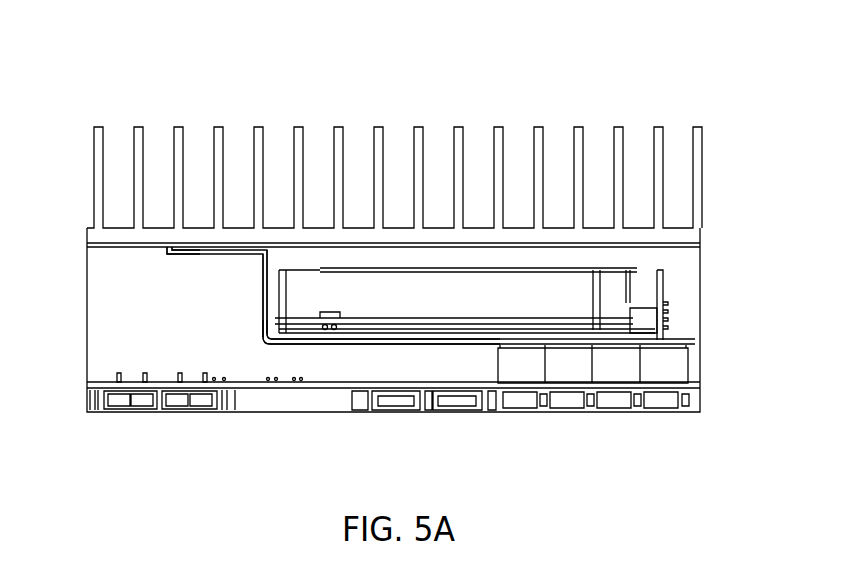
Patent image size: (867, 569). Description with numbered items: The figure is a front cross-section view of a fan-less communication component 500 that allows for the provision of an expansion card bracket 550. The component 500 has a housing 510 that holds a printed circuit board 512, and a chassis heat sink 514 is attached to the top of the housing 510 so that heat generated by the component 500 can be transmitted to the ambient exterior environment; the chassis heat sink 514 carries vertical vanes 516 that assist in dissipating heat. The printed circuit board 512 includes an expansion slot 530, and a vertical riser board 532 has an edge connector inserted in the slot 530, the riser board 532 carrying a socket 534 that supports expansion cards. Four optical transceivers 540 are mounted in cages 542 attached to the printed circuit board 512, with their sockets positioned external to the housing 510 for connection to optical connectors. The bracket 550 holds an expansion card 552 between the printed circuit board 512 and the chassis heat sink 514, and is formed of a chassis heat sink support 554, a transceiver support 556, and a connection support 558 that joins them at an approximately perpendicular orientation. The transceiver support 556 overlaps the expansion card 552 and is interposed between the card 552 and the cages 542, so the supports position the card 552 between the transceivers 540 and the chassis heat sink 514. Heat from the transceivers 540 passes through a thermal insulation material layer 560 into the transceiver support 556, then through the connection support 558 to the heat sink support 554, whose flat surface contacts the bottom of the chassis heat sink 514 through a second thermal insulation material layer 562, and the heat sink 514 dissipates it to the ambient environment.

The fan-less communication component 500 is at (120, 78).
The housing 510 is at (103, 316).
The printed circuit board 512 is at (117, 406).
The chassis heat sink 514 is at (560, 232).
The vertical vanes 516 is at (497, 125).
The expansion slot 530 is at (678, 367).
The vertical riser board 532 is at (661, 307).
The socket 534 is at (637, 306).
The optical transceivers 540 is at (572, 377).
The cages 542 is at (498, 390).
The expansion card bracket 550 is at (265, 345).
The expansion card 552 is at (402, 318).
The chassis heat sink support 554 is at (233, 250).
The transceiver support 556 is at (390, 345).
The connection support 558 is at (263, 285).
The thermal insulation material layer 560 is at (653, 334).
The thermal insulation material layer 562 is at (165, 246).